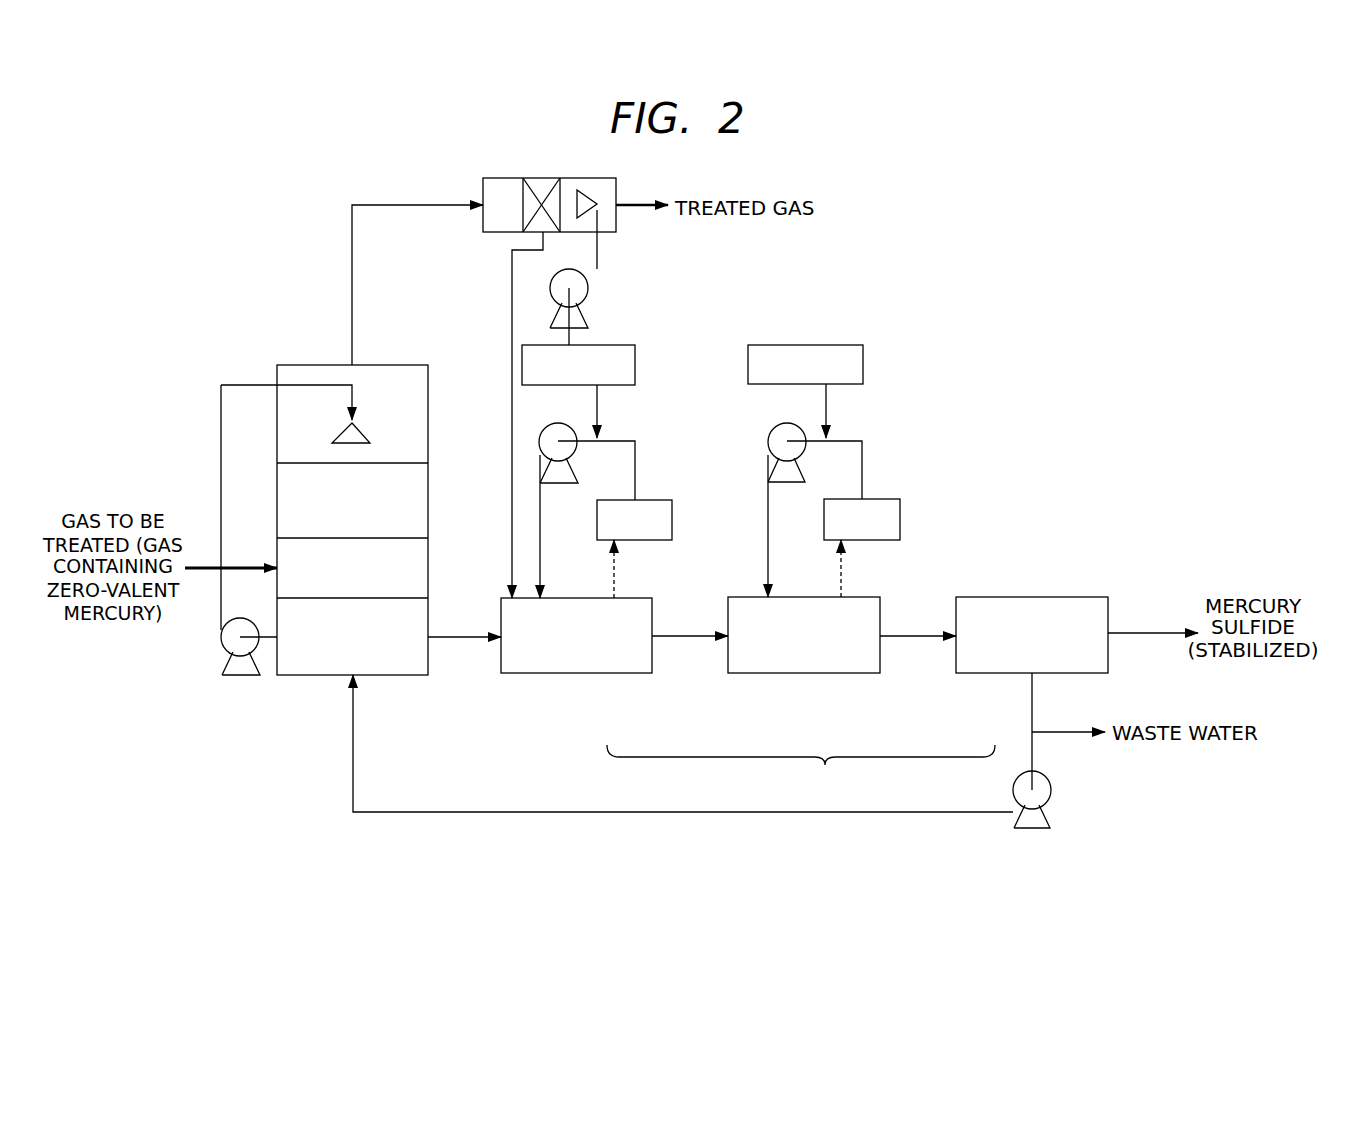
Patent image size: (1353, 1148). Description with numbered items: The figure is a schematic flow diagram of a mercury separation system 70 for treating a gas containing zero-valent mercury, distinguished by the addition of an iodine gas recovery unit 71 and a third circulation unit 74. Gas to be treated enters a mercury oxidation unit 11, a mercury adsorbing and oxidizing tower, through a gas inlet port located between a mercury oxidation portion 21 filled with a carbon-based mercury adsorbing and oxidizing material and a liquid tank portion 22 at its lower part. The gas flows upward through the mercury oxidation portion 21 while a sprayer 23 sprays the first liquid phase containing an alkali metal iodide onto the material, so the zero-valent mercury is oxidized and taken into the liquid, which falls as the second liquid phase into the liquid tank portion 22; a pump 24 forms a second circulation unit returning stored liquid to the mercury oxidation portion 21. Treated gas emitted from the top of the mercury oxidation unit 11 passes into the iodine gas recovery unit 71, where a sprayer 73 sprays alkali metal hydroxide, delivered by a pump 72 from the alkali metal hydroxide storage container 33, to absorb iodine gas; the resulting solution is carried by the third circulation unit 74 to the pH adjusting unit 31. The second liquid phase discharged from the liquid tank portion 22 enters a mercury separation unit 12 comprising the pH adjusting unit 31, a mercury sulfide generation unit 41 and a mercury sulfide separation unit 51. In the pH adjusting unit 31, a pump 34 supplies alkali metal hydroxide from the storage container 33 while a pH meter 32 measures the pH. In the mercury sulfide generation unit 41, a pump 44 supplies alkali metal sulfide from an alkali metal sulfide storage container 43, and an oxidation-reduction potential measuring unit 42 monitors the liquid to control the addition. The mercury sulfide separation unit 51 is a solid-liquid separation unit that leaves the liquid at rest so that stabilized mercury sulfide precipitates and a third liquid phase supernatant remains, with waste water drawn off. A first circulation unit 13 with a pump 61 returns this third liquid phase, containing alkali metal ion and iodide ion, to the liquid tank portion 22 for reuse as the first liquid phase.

The mercury separation system 70 is at (1063, 210).
The mercury oxidation unit 11 is at (275, 342).
The mercury oxidation portion 21 is at (430, 478).
The liquid tank portion 22 is at (430, 620).
The sprayer 23 is at (358, 423).
The pump 24 is at (222, 645).
The iodine gas recovery unit 71 is at (618, 225).
The pump 72 is at (590, 290).
The sprayer 73 is at (600, 200).
The third circulation unit 74 is at (510, 268).
The alkali metal hydroxide storage container 33 is at (637, 366).
The pump 34 is at (558, 485).
The pH meter 32 is at (674, 520).
The pH adjusting unit 31 is at (628, 675).
The alkali metal sulfide storage container 43 is at (865, 366).
The pump 44 is at (770, 428).
The oxidation-reduction potential measuring unit 42 is at (902, 518).
The mercury sulfide generation unit 41 is at (752, 675).
The mercury sulfide separation unit 51 is at (973, 675).
The mercury separation unit 12 is at (801, 770).
The pump 61 is at (1052, 788).
The first circulation unit 13 is at (752, 814).